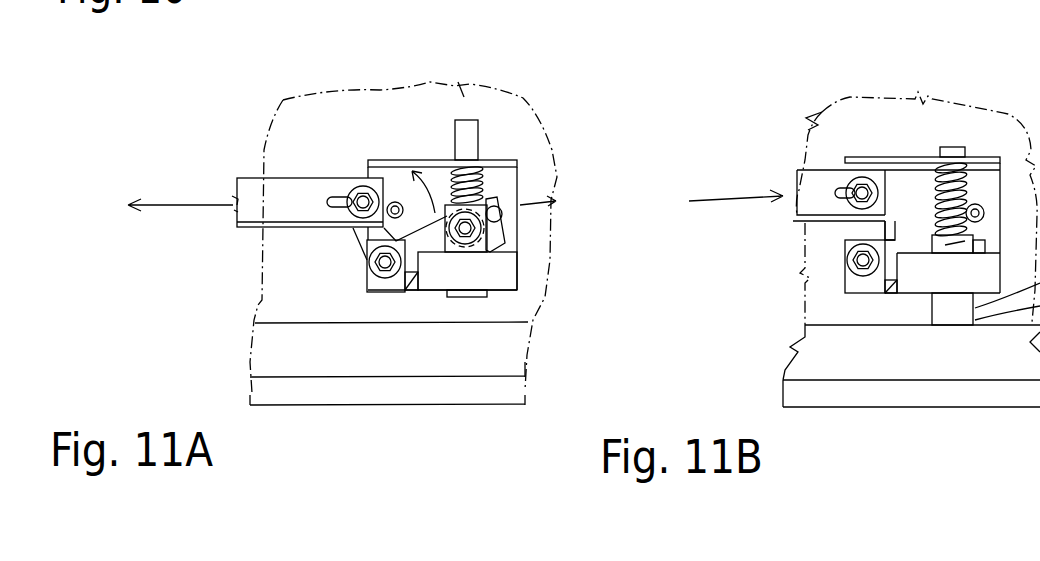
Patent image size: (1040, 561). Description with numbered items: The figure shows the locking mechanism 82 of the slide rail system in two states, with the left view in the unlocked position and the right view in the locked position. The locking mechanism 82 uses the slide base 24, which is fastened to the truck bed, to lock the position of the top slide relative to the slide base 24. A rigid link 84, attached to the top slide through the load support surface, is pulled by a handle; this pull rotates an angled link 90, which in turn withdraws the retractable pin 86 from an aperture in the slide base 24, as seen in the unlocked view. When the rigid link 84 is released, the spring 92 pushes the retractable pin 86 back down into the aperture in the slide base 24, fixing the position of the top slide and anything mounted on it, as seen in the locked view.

In FIG. 11A, the slide base 24 is at (375, 354).
In FIG. 11B, the slide base 24 is at (869, 355).
In FIG. 11A, the locking mechanism 82 is at (588, 137).
In FIG. 11A, the rigid link 84 is at (327, 177).
In FIG. 11B, the rigid link 84 is at (797, 170).
In FIG. 11A, the retractable pin 86 is at (455, 130).
In FIG. 11A, the angled link 90 is at (441, 250).
In FIG. 11B, the angled link 90 is at (847, 227).
In FIG. 11A, the spring 92 is at (480, 193).
In FIG. 11B, the spring 92 is at (937, 193).